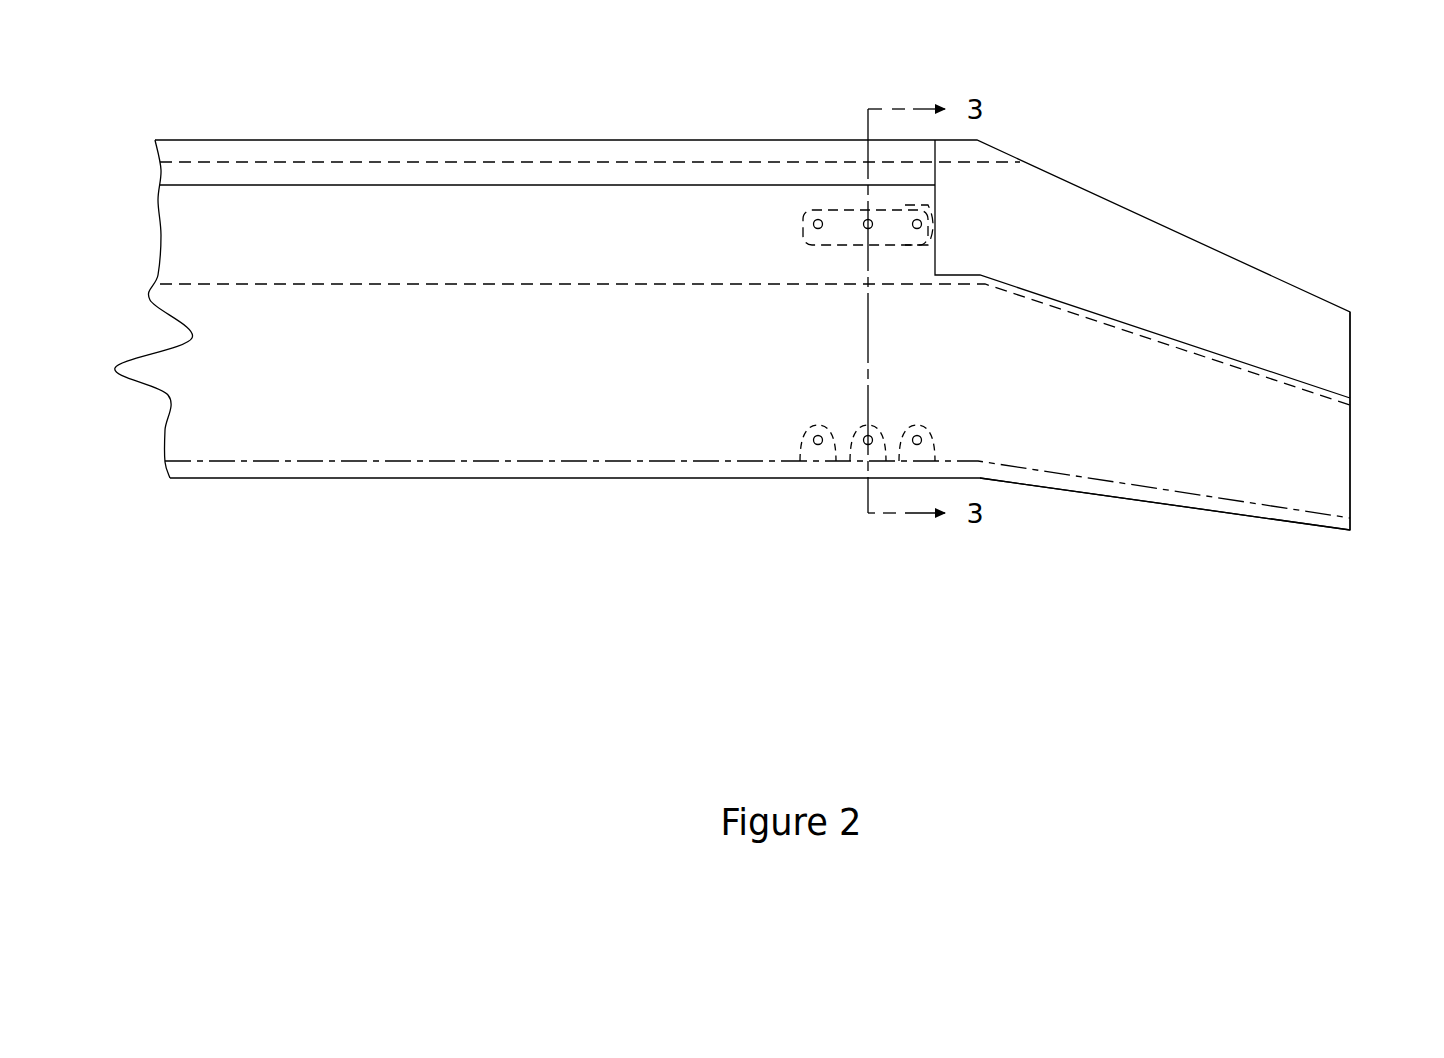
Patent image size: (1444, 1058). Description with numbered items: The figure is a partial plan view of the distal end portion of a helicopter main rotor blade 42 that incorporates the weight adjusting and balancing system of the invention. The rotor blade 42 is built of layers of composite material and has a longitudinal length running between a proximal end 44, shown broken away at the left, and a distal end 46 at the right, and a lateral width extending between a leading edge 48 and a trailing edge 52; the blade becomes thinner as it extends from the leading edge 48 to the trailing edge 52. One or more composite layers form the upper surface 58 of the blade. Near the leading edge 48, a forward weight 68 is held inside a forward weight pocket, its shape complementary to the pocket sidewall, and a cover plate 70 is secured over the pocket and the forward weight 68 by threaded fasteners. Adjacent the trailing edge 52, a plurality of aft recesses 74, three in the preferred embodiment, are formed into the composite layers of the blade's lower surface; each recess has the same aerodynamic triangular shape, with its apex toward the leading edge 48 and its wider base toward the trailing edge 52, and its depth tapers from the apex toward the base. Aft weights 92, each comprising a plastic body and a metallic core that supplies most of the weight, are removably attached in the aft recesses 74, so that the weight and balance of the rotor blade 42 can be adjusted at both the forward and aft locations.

The rotor blade 42 is at (573, 433).
The proximal end 44 is at (146, 472).
The distal end 46 is at (1369, 562).
The leading edge 48 is at (360, 140).
The trailing edge 52 is at (407, 478).
The upper surface 58 is at (293, 423).
The forward weight 68 is at (928, 203).
The cover plate 70 is at (835, 208).
The aft recesses 74 is at (808, 465).
The aft weights 92 is at (823, 465).